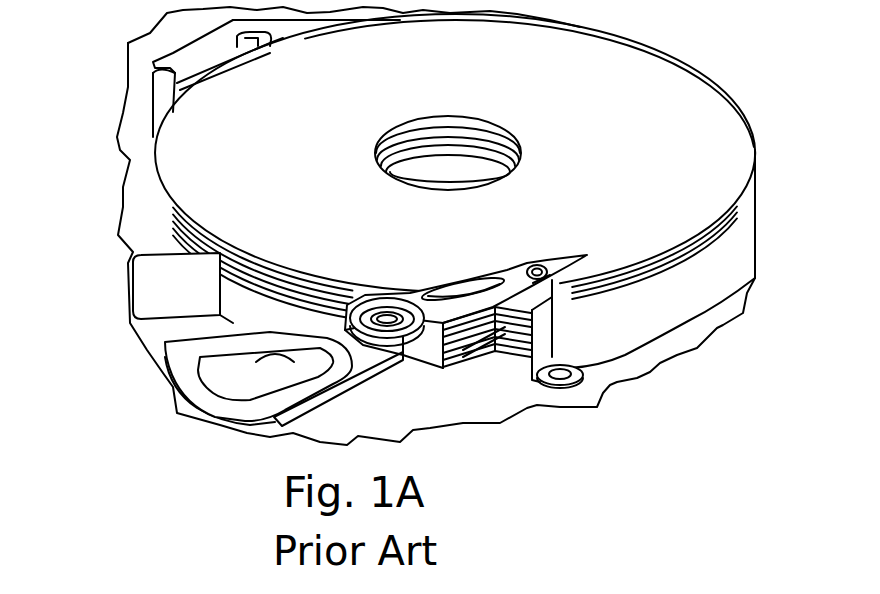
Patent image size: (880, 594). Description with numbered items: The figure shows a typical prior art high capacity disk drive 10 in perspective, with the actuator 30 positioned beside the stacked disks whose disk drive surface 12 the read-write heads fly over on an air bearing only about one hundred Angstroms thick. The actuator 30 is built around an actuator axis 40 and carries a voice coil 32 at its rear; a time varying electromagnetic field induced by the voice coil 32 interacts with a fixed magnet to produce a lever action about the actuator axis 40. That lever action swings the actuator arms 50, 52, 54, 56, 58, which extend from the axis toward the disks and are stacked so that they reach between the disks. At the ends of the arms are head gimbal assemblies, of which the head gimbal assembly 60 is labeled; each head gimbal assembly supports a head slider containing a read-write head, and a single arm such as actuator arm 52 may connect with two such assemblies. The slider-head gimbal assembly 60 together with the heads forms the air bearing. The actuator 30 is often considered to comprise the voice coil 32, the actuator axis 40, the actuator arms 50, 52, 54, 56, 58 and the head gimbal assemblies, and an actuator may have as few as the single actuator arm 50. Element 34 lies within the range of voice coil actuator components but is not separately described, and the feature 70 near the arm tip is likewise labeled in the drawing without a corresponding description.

The high capacity disk drive 10 is at (392, 232).
The disk drive surface 12 is at (665, 80).
The actuator 30 is at (432, 378).
The voice coil 32 is at (241, 407).
The voice coil actuator component 34 is at (340, 390).
The actuator axis 40 is at (384, 309).
The actuator arm 50 is at (489, 271).
The actuator arm 52 is at (472, 352).
The actuator arm 54 is at (465, 352).
The actuator arm 56 is at (470, 352).
The actuator arm 58 is at (484, 352).
The head gimbal assembly 60 is at (565, 263).
The tooling hole 70 is at (536, 265).